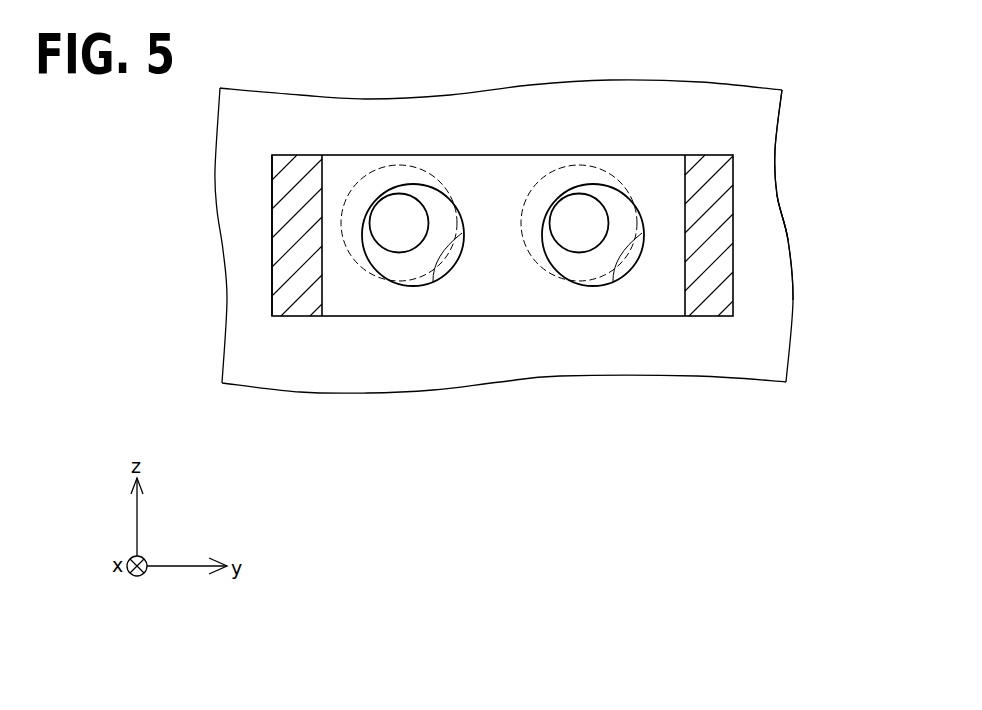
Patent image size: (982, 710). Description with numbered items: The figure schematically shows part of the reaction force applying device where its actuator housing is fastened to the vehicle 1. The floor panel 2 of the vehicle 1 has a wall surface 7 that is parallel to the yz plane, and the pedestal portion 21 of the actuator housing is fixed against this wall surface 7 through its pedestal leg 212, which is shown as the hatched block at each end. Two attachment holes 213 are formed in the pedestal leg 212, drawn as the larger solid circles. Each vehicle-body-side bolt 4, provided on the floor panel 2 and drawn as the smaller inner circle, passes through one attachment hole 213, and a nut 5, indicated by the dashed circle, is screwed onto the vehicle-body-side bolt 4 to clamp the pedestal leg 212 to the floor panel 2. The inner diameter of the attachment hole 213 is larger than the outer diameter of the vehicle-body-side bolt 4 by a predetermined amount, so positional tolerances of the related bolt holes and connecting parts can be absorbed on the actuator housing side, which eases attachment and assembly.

The vehicle 1 is at (758, 158).
The floor panel 2 is at (758, 178).
The wall surface 7 is at (763, 203).
The pedestal portion 21 is at (287, 213).
The pedestal leg 212 is at (270, 258).
The attachment hole 213 is at (433, 282).
The vehicle-body-side bolt 4 is at (395, 210).
The nut 5 is at (355, 207).